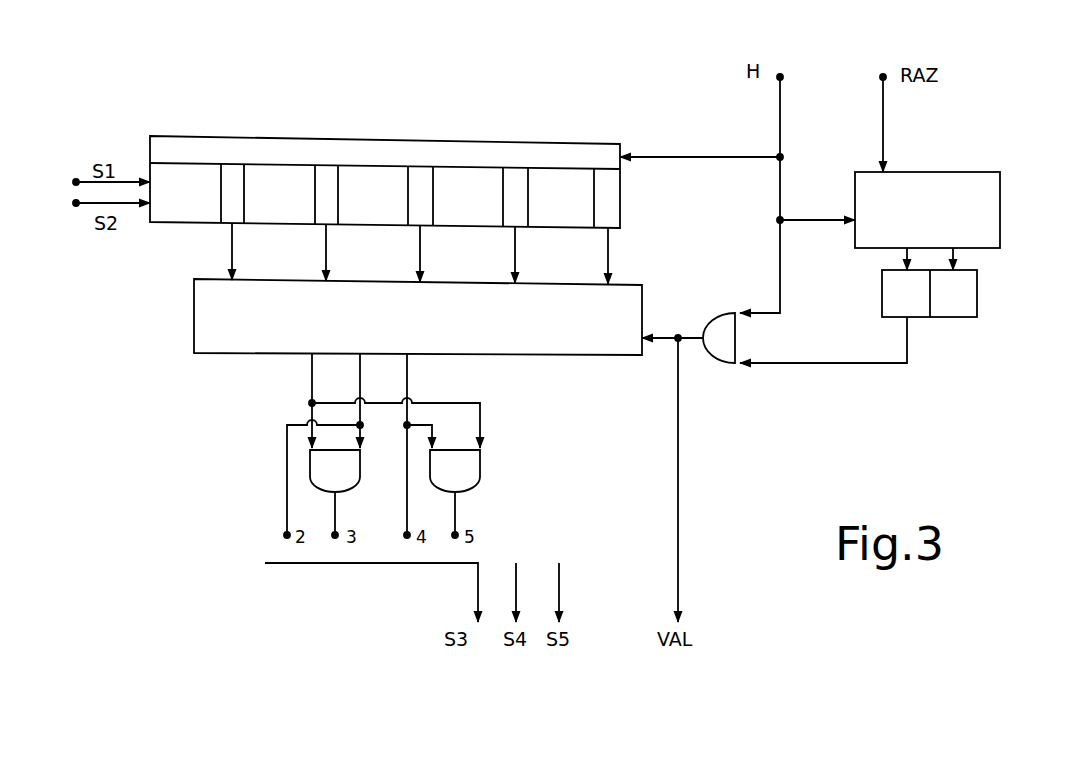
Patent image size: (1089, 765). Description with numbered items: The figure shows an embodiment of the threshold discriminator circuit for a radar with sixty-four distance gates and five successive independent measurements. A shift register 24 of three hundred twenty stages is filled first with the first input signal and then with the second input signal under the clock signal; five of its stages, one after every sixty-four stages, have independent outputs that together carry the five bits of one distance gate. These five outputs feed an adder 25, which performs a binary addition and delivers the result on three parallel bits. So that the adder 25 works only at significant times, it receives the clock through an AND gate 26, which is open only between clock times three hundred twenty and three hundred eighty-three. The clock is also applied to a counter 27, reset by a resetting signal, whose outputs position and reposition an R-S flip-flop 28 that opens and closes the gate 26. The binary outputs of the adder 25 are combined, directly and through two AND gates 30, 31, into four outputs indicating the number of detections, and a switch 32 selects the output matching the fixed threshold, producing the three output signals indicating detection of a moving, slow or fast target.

The shift register 24 is at (165, 224).
The adder 25 is at (194, 337).
The AND gate 26 is at (722, 362).
The counter 27 is at (1002, 215).
The R-S flip-flop 28 is at (977, 300).
The AND gate 30 is at (357, 482).
The AND gate 31 is at (478, 475).
The switch 32 is at (338, 567).